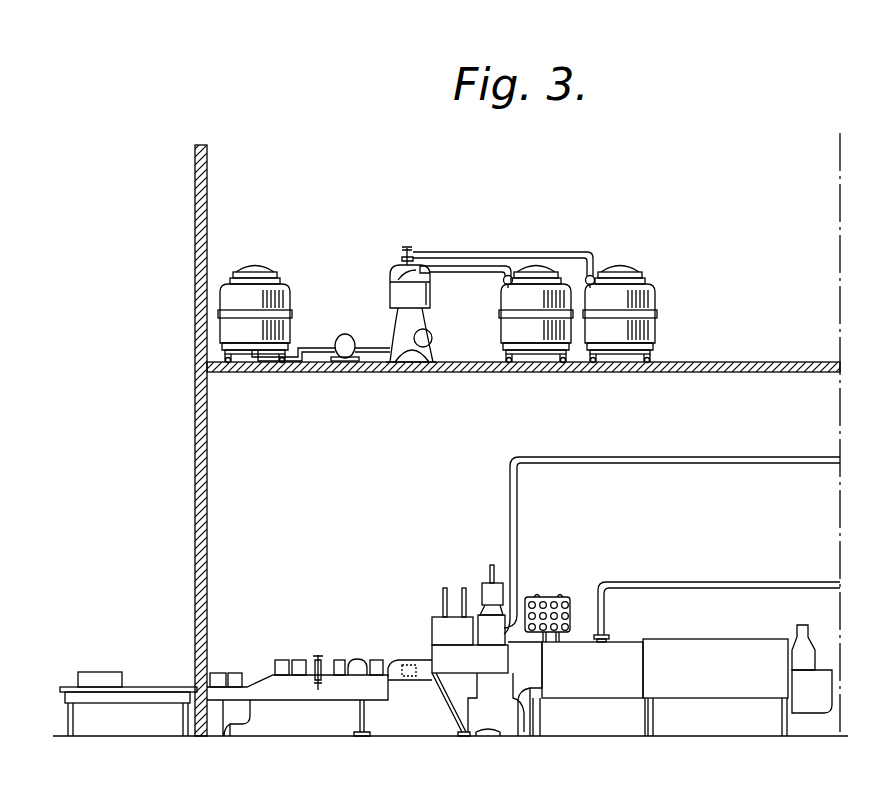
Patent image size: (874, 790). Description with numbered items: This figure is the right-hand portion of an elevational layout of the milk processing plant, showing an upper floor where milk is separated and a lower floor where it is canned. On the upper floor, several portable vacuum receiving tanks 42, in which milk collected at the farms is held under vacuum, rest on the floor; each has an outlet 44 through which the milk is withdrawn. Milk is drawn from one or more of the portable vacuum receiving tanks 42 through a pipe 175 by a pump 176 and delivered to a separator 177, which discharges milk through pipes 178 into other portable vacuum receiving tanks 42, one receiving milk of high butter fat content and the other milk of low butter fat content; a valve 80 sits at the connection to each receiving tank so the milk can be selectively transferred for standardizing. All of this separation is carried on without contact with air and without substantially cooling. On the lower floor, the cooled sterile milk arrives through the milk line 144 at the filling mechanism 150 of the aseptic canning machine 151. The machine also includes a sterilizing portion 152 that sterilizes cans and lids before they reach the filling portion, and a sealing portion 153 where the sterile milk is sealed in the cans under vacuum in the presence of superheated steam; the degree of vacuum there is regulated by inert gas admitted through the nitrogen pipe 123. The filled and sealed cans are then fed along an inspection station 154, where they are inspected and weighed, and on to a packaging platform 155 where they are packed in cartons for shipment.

The portable vacuum receiving tank 42 is at (278, 304).
The outlet 44 is at (252, 357).
The valve 80 is at (503, 280).
The nitrogen pipe 123 is at (722, 462).
The milk line 144 is at (732, 583).
The filling mechanism 150 is at (617, 652).
The aseptic canning machine 151 is at (420, 614).
The sterilizing portion 152 is at (730, 650).
The sealing portion 153 is at (490, 590).
The inspection station 154 is at (286, 680).
The packaging platform 155 is at (146, 687).
The pipe 175 is at (315, 347).
The pump 176 is at (348, 341).
The separator 177 is at (395, 297).
The pipes 178 is at (481, 265).